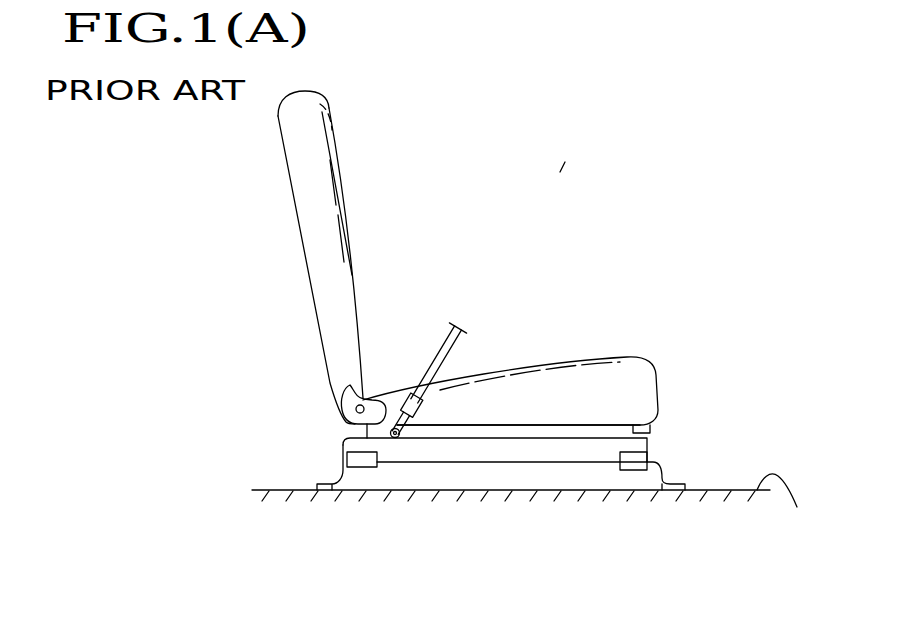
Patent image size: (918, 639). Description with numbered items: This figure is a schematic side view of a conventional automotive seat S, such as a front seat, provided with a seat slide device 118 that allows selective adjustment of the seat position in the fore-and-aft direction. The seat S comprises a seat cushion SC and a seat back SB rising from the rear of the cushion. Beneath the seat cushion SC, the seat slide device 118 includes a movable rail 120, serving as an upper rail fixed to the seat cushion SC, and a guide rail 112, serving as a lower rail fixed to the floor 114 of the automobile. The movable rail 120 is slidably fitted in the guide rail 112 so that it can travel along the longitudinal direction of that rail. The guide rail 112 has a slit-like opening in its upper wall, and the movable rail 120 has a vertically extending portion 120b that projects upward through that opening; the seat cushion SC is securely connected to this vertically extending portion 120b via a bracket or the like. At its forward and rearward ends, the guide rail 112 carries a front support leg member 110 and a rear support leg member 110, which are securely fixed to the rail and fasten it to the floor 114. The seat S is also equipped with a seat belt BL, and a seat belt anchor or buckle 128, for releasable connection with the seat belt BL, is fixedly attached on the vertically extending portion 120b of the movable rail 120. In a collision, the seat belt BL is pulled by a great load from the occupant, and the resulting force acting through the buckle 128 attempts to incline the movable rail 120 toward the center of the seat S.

The seat S is at (560, 172).
The seat back SB is at (337, 142).
The seat cushion SC is at (605, 355).
The seat belt BL is at (450, 347).
The support leg member 110 is at (323, 463).
The guide rail 112 is at (417, 453).
The floor 114 is at (798, 522).
The seat slide device 118 is at (522, 468).
The movable rail 120 is at (636, 430).
The vertically extending portion 120b is at (571, 433).
The seat belt anchor or buckle 128 is at (422, 411).